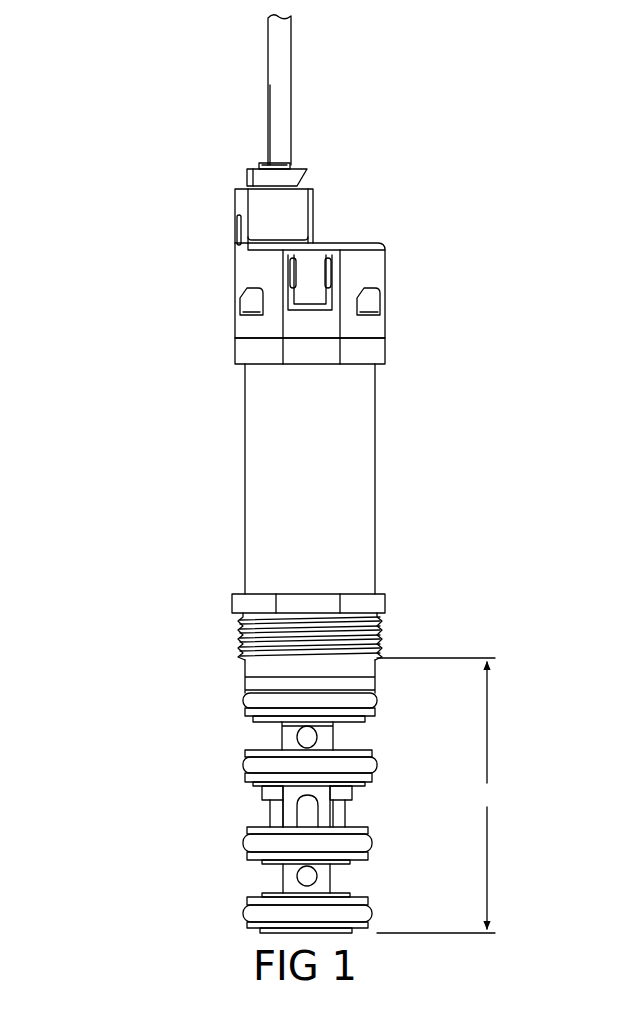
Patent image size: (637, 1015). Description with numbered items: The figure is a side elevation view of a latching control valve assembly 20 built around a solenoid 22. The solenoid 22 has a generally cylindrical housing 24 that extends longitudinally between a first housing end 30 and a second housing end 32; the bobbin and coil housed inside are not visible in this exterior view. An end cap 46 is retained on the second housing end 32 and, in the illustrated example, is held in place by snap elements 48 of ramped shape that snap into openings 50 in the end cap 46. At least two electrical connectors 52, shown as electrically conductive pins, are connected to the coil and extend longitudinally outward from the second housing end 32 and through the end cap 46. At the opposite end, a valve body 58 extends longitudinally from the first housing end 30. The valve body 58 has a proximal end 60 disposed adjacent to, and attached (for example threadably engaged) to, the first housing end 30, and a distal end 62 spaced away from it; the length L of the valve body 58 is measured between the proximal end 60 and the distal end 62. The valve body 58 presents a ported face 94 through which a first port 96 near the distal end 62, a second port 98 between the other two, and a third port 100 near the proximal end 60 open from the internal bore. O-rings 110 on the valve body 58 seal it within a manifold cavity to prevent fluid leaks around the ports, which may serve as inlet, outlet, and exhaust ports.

The latching control valve assembly 20 is at (118, 394).
The solenoid 22 is at (410, 510).
The housing 24 is at (258, 491).
The first housing end 30 is at (410, 622).
The second housing end 32 is at (412, 348).
The end cap 46 is at (374, 268).
The snap elements 48 is at (248, 300).
The openings 50 is at (400, 304).
The electrical connectors 52 is at (228, 160).
The valve body 58 is at (155, 803).
The proximal end 60 is at (212, 673).
The distal end 62 is at (232, 926).
The ported face 94 is at (262, 828).
The first port 96 is at (376, 878).
The second port 98 is at (378, 808).
The third port 100 is at (380, 736).
The o-rings 110 is at (243, 698).